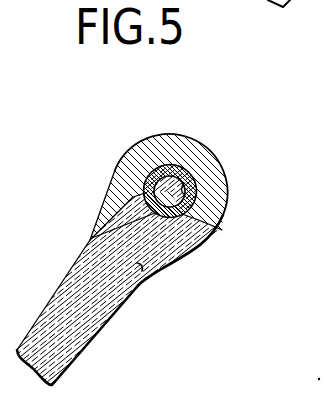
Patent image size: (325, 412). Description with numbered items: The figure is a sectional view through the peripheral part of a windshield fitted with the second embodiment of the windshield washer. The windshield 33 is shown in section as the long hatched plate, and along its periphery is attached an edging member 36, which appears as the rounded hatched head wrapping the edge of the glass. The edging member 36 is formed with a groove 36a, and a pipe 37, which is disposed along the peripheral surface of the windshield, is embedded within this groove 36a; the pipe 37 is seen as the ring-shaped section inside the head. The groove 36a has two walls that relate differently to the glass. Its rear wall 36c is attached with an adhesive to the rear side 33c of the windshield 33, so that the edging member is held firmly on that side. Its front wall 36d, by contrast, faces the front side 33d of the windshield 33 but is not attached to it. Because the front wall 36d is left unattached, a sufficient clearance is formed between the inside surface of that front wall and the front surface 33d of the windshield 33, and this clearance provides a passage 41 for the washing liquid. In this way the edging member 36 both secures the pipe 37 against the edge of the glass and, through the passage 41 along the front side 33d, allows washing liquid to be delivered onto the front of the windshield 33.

The windshield 33 is at (72, 335).
The rear side of the windshield 33c is at (218, 234).
The front side of the windshield 33d is at (130, 197).
The edging member 36 is at (152, 158).
The groove 36a is at (176, 189).
The rear wall of the groove 36c is at (141, 272).
The front wall of the groove 36d is at (100, 228).
The pipe 37 is at (176, 163).
The passage 41 is at (87, 253).